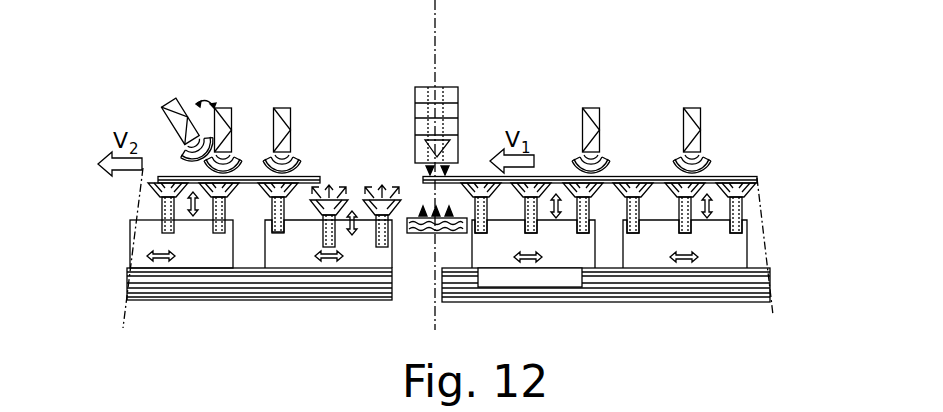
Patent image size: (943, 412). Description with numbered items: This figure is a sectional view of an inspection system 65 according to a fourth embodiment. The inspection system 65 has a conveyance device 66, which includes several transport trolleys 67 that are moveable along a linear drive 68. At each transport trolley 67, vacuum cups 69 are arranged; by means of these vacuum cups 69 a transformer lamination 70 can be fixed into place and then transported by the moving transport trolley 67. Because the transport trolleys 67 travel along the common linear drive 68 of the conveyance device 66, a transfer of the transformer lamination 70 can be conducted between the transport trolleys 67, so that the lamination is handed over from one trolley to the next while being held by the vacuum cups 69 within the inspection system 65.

The inspection system 65 is at (714, 78).
The conveyance device 66 is at (776, 212).
The transport trolley 67 is at (285, 256).
The linear drive 68 is at (330, 288).
The vacuum cup 69 is at (627, 183).
The transformer lamination 70 is at (539, 184).